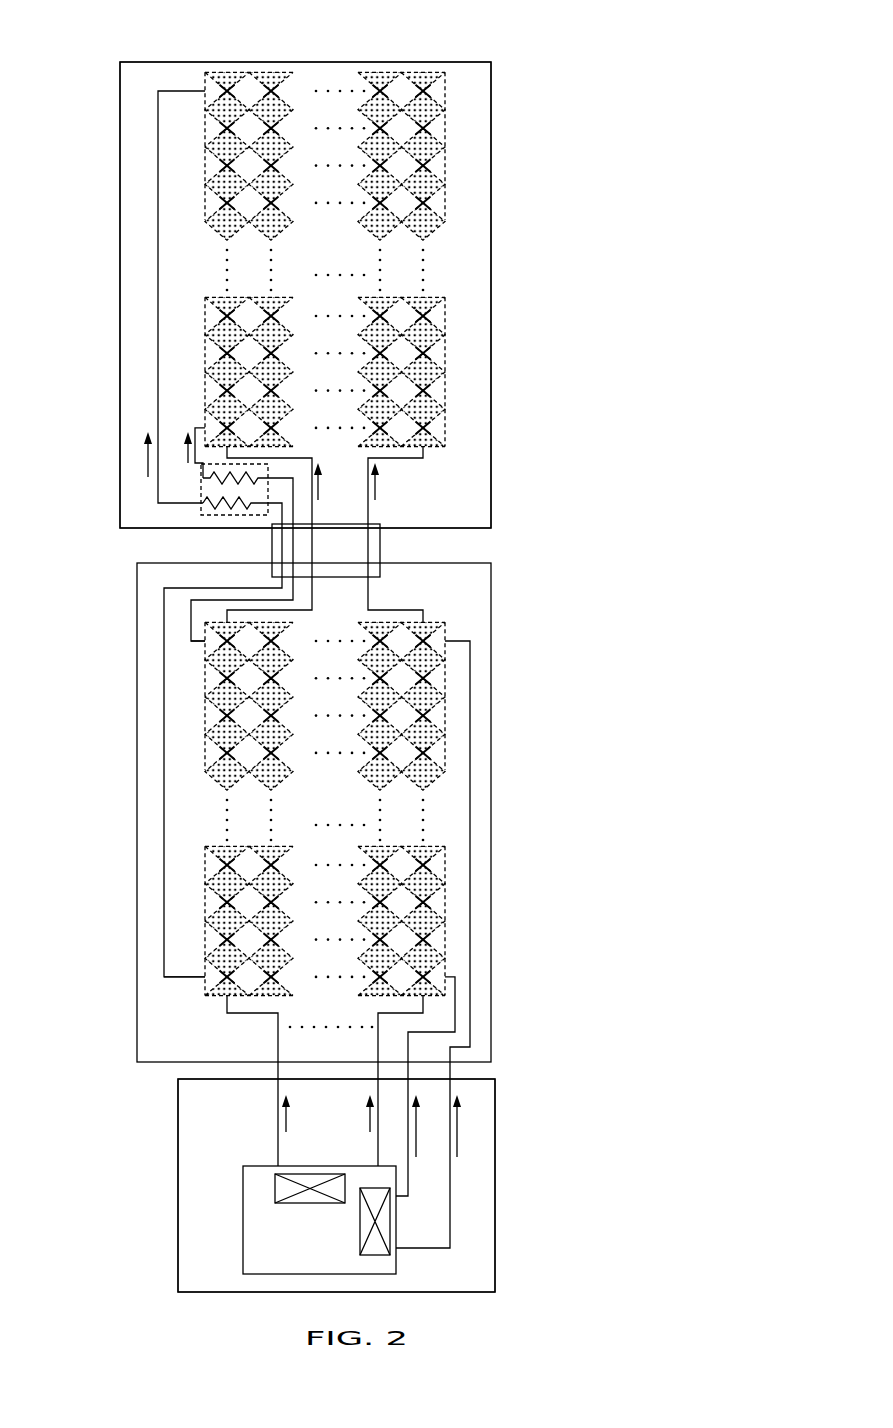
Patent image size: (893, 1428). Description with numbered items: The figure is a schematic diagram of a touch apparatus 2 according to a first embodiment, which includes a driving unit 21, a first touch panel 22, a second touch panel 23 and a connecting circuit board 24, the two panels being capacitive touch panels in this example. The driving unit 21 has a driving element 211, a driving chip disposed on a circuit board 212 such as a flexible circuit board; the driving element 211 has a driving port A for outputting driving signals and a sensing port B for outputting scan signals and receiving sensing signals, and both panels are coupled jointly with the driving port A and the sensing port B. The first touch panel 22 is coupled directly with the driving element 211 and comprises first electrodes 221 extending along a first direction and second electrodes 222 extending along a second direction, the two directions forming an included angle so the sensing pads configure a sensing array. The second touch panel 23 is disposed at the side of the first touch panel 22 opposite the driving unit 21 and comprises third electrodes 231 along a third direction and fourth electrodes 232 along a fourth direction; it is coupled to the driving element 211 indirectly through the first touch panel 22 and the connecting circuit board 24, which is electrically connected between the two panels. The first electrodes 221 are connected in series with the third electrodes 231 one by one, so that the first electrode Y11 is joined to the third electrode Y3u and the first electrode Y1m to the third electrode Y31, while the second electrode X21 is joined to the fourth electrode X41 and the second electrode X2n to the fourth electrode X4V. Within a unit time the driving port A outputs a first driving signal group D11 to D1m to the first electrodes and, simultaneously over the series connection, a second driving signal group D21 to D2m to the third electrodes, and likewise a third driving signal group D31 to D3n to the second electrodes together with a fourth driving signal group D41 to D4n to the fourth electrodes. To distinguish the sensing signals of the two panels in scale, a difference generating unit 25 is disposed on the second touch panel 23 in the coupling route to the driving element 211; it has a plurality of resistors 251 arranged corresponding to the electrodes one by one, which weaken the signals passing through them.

The touch apparatus 2 is at (108, 40).
The driving unit 21 is at (166, 1222).
The driving element 211 is at (243, 1262).
The circuit board 212 is at (178, 1150).
The first touch panel 22 is at (128, 800).
The first electrodes 221 is at (205, 716).
The second electrodes 222 is at (426, 630).
The second touch panel 23 is at (112, 207).
The third electrodes 231 is at (440, 127).
The fourth electrodes 232 is at (378, 80).
The connecting circuit board 24 is at (380, 547).
The difference generating unit 25 is at (201, 510).
The resistors 251 is at (215, 497).
The driving port A is at (385, 1258).
The sensing port B is at (275, 1176).
The third electrode Y3u is at (212, 90).
The third electrode Y31 is at (210, 425).
The fourth electrode X41 is at (224, 88).
The fourth electrode X4V is at (421, 80).
The first electrode Y1m is at (205, 641).
The first electrode Y11 is at (205, 977).
The second electrode X21 is at (218, 997).
The second electrode X2n is at (434, 992).
The second driving signal group D2m is at (143, 465).
The second driving signal group D21 is at (178, 464).
The fourth driving signal group D41 is at (334, 492).
The fourth driving signal group D4n is at (391, 492).
The third driving signal group D31 is at (298, 1128).
The third driving signal group D3n is at (361, 1128).
The first driving signal group D11 is at (429, 1137).
The first driving signal group D1m is at (472, 1137).